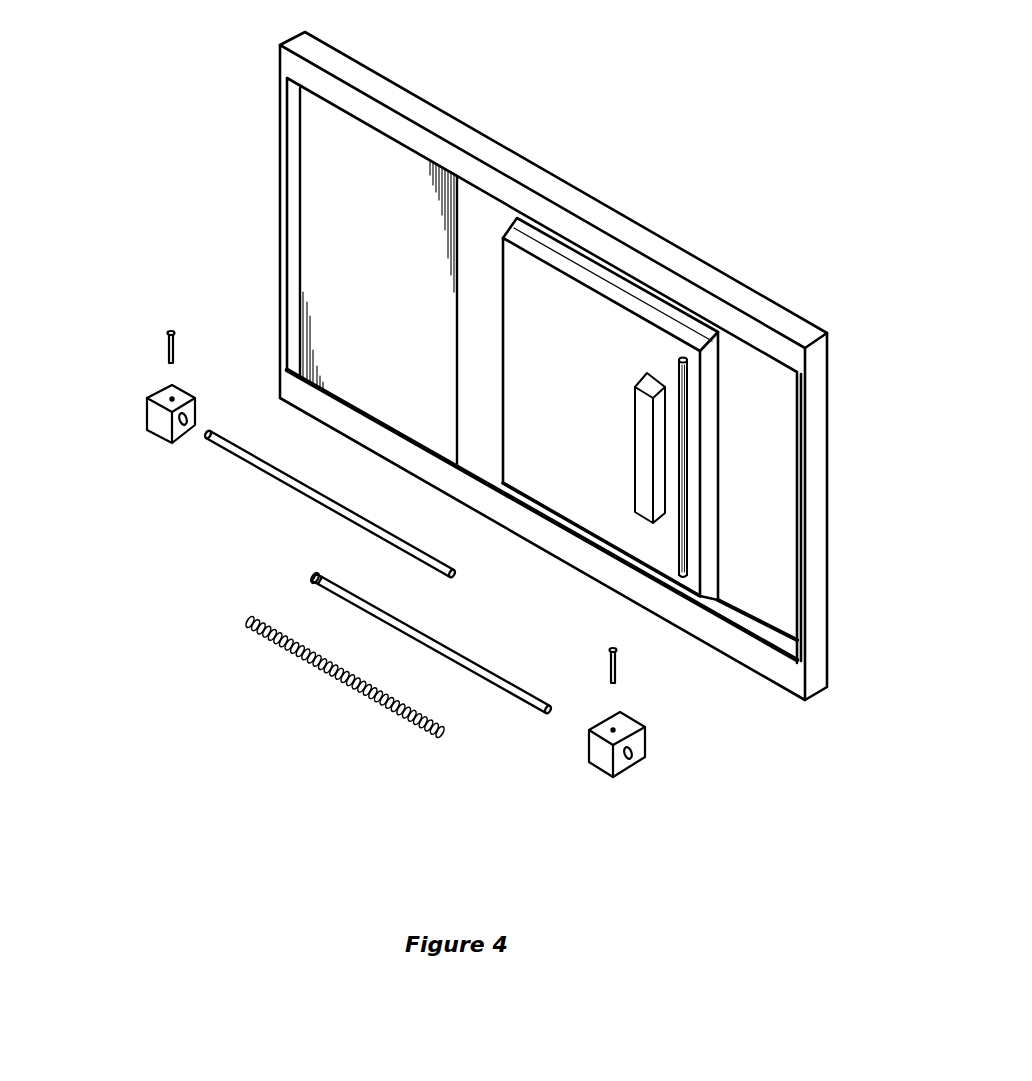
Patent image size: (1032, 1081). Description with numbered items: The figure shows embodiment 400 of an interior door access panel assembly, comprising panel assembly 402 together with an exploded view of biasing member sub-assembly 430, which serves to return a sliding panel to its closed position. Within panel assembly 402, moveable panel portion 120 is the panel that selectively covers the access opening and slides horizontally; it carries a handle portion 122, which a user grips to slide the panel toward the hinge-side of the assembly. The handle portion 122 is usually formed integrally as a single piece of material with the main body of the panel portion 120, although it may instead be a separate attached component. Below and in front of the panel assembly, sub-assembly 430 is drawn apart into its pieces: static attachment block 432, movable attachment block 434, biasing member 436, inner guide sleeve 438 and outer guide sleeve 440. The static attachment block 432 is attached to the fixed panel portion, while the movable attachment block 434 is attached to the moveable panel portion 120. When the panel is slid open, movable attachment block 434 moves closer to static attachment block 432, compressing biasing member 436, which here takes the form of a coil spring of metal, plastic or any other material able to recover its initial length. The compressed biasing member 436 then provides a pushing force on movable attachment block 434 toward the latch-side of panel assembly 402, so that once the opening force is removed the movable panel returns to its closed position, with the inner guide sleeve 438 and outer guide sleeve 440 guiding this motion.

The embodiment 400 is at (600, 356).
The panel assembly 402 is at (814, 314).
The moveable panel portion 120 is at (585, 310).
The handle portion 122 is at (666, 372).
The biasing member sub-assembly 430 is at (362, 586).
The static attachment block 432 is at (150, 392).
The movable attachment block 434 is at (605, 762).
The biasing member 436 is at (350, 684).
The inner guide sleeve 438 is at (310, 501).
The outer guide sleeve 440 is at (462, 656).